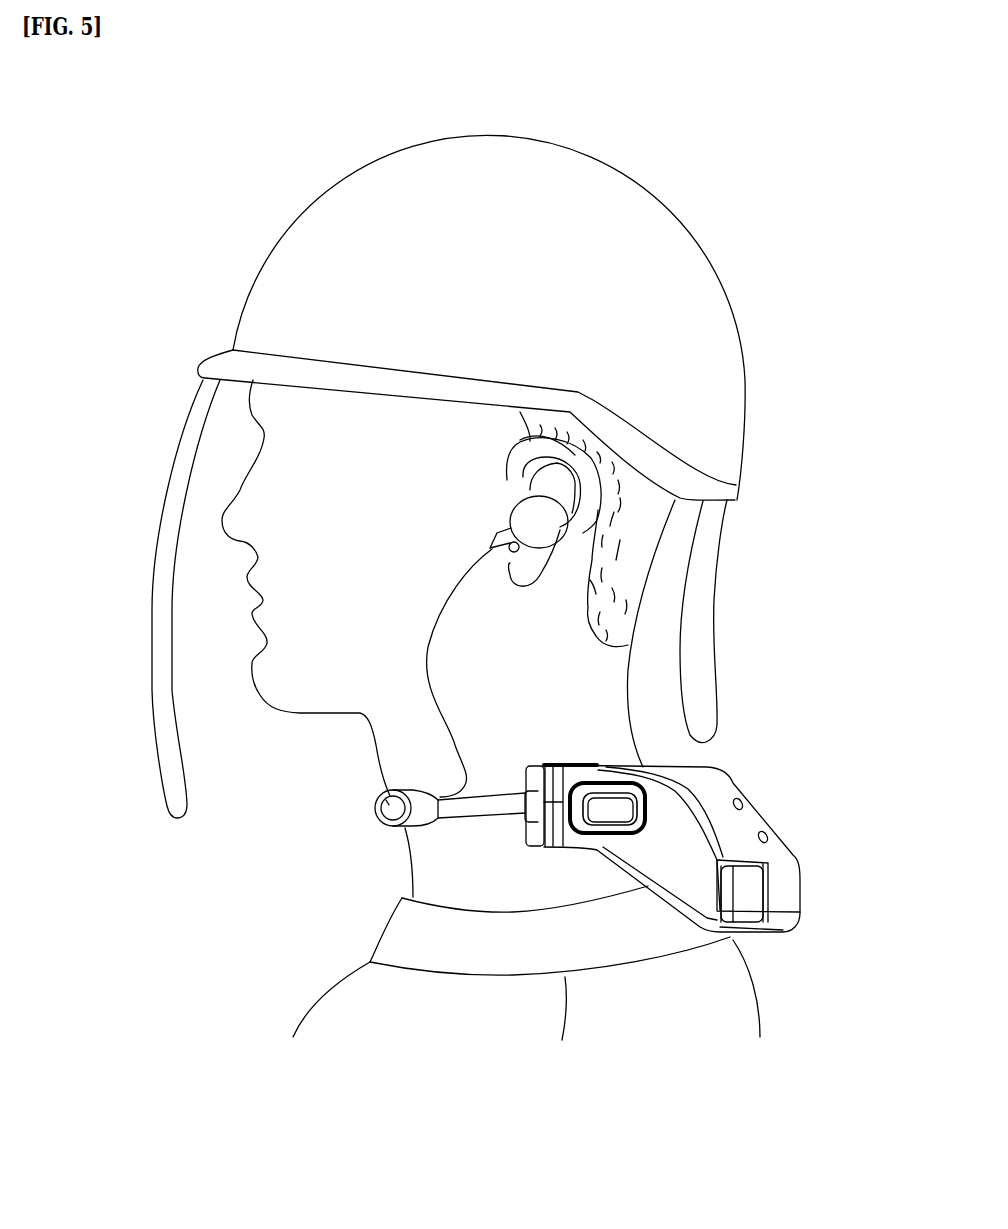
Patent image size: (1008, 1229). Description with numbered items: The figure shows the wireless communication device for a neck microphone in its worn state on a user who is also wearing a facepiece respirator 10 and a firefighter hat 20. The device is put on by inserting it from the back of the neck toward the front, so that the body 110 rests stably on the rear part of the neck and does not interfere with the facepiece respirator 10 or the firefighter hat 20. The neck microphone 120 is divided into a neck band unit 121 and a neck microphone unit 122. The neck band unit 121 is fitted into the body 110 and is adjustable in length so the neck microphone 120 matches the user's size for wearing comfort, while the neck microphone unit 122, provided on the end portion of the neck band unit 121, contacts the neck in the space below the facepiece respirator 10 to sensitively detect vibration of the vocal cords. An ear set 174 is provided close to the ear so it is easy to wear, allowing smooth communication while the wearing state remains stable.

The facepiece respirator 10 is at (148, 628).
The firefighter hat 20 is at (702, 622).
The ear set 174 is at (560, 527).
The body 110 is at (790, 870).
The neck microphone 120 is at (355, 868).
The neck band unit 121 is at (455, 815).
The neck microphone unit 122 is at (377, 826).